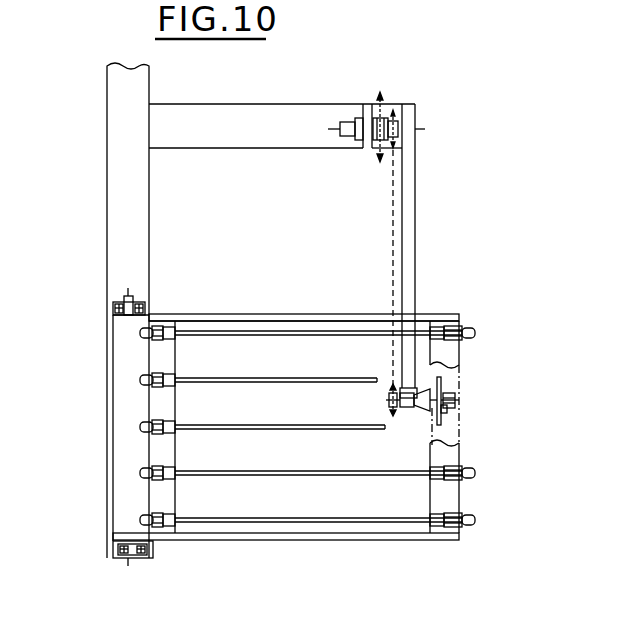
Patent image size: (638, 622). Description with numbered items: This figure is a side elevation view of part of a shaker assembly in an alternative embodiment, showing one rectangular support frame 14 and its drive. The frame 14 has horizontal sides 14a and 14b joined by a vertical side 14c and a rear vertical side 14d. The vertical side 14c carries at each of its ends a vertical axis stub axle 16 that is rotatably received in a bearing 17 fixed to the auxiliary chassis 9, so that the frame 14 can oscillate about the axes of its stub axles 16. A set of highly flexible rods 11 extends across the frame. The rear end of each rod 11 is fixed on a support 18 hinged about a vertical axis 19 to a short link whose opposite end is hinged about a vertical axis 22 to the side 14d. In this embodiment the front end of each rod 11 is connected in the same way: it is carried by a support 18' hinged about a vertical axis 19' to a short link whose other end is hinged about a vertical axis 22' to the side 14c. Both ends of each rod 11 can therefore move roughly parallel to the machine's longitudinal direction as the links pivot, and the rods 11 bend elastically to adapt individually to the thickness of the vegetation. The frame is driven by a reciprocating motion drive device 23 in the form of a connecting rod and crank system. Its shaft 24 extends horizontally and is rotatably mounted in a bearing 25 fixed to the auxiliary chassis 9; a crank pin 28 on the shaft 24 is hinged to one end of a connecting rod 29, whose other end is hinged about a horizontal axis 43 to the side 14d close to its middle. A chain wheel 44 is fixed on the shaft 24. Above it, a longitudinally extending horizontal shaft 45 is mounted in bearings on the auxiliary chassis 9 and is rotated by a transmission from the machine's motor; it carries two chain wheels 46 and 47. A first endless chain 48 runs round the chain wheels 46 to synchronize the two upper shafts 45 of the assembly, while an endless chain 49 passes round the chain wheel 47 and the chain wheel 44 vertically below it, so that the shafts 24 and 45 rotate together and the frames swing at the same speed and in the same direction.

The auxiliary chassis 9 is at (298, 102).
The rod 11 is at (254, 336).
The support frame 14 is at (305, 312).
The horizontal side 14a is at (222, 313).
The horizontal side 14b is at (220, 541).
The vertical side 14c is at (128, 403).
The vertical side 14d is at (446, 454).
The stub axle 16 is at (128, 300).
The bearing 17 is at (122, 318).
The support 18 is at (492, 417).
The support 18' is at (106, 426).
The vertical axis 19 is at (480, 413).
The vertical axis 19' is at (143, 426).
The vertical axis 22 is at (428, 394).
The vertical axis 22' is at (193, 426).
The reciprocating motion drive device 23 is at (523, 428).
The shaft 24 is at (430, 390).
The bearing 25 is at (410, 412).
The crank pin 28 is at (456, 412).
The connecting rod 29 is at (456, 402).
The horizontal axis 43 is at (441, 392).
The chain wheel 44 is at (388, 402).
The shaft 45 is at (420, 124).
The chain wheel 46 is at (382, 106).
The chain wheel 47 is at (396, 118).
The first endless chain 48 is at (378, 162).
The endless chain 49 is at (392, 192).